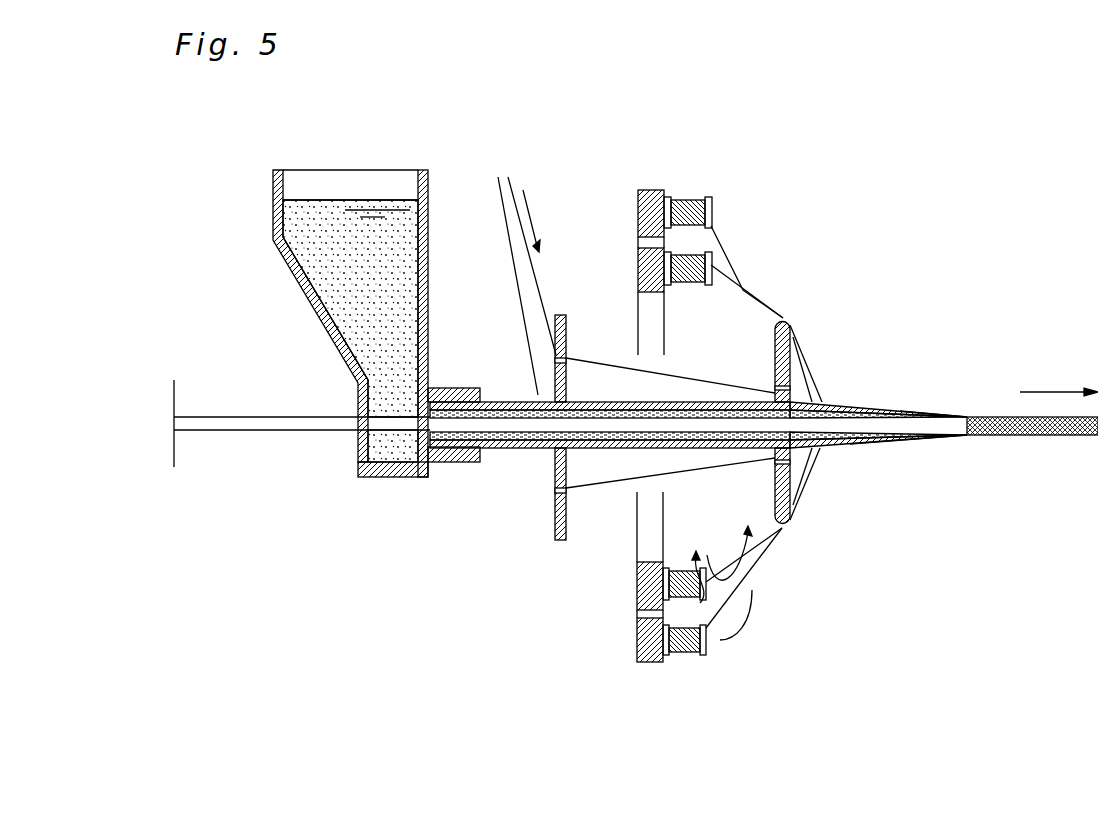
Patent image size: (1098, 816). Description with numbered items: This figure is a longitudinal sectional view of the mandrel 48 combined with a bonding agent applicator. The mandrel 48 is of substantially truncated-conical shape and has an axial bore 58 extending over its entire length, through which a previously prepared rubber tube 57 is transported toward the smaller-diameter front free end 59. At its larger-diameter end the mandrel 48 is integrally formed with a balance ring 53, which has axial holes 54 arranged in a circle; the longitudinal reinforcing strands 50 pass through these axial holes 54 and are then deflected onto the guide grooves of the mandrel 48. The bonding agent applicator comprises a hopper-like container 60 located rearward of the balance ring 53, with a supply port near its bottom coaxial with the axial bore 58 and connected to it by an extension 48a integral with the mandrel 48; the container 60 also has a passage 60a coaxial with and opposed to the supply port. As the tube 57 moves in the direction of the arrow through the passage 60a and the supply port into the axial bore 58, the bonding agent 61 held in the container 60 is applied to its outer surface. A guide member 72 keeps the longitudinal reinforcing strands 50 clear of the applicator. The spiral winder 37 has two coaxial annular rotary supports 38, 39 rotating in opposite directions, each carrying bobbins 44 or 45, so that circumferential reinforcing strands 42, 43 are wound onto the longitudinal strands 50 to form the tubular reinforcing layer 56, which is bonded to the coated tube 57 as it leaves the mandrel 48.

The spiral winder 37 is at (643, 523).
The annular rotary support 38 is at (647, 582).
The annular rotary support 39 is at (643, 662).
The circumferential reinforcing strand 42 is at (725, 260).
The circumferential reinforcing strand 43 is at (740, 290).
The bobbin 44 is at (692, 202).
The bobbin 45 is at (692, 257).
The mandrel 48 is at (847, 406).
The extension 48a is at (512, 450).
The longitudinal reinforcing strand 50 is at (538, 277).
The balance ring 53 is at (793, 334).
The axial hole 54 is at (847, 402).
The reinforcing layer 56 is at (920, 411).
The tube 57 is at (285, 427).
The axial bore 58 is at (873, 446).
The front free end 59 is at (967, 417).
The hopper-like container 60 is at (432, 187).
The passage 60a is at (357, 442).
The bonding agent 61 is at (390, 312).
The guide member 72 is at (553, 504).